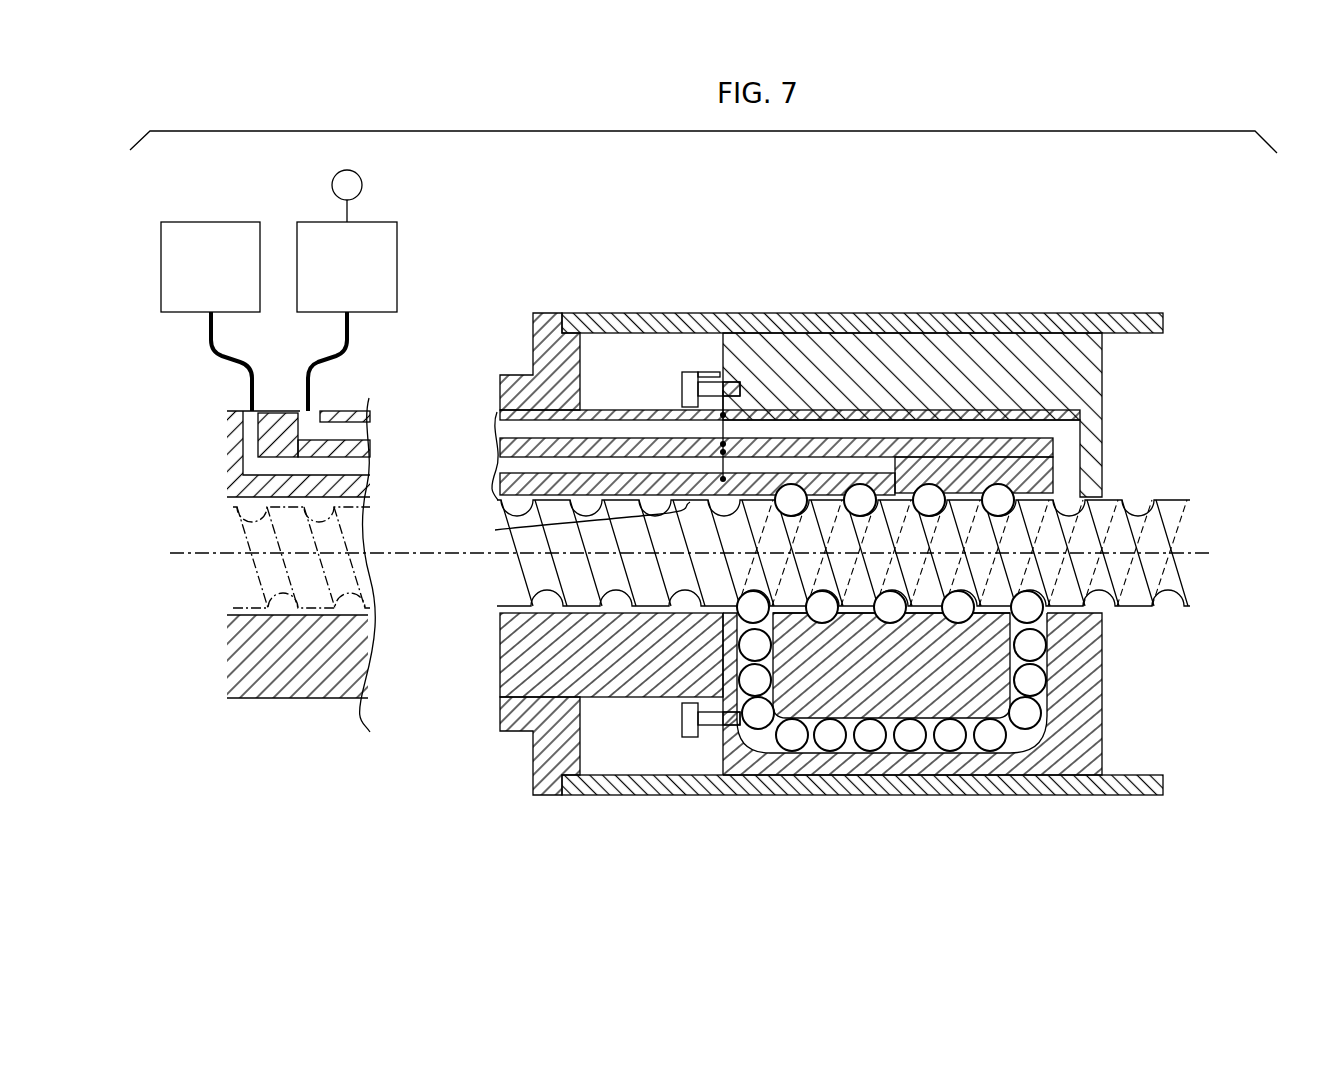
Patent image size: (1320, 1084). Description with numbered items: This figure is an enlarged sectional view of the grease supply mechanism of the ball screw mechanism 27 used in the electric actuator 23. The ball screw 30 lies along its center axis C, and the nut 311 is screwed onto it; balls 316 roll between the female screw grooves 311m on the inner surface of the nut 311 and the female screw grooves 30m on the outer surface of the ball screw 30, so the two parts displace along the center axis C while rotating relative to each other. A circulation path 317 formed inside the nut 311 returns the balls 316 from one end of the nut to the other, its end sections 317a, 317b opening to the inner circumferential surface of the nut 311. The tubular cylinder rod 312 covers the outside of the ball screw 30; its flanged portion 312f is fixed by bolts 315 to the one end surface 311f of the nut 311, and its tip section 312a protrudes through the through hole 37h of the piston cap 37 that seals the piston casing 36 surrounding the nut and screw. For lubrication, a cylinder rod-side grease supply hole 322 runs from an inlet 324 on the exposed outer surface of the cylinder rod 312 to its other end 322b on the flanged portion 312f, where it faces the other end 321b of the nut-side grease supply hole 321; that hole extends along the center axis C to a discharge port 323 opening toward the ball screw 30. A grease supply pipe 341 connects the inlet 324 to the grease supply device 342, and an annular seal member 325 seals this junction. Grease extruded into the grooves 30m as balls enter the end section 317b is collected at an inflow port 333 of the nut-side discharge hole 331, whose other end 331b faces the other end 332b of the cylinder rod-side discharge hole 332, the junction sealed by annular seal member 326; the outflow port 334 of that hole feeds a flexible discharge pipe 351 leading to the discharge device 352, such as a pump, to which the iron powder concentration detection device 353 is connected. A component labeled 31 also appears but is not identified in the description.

The electric actuator 23 is at (1086, 303).
The ball screw mechanism 27 is at (1150, 400).
The ball screw 30 is at (238, 490).
The female screw grooves of ball screw 30m is at (275, 598).
The ball 31 is at (1050, 440).
The piston casing 36 is at (905, 425).
The piston cap 37 is at (500, 372).
The through hole 37h is at (492, 430).
The nut 311 is at (1102, 740).
The one end surface of nut 311f is at (735, 445).
The female screw grooves of nut 311m is at (1045, 603).
The cylinder rod 312 is at (300, 705).
The tip section of cylinder rod 312a is at (330, 703).
The flanged portion 312f is at (723, 390).
The bolts 315 is at (688, 373).
The balls 316 is at (1062, 418).
The circulation path 317 is at (872, 744).
The end section of circulation path 317a is at (780, 596).
The end section of circulation path 317b is at (1045, 601).
The nut-side grease supply hole 321 is at (860, 468).
The other end of nut-side grease supply hole 321b is at (792, 430).
The cylinder rod-side grease supply hole 322 is at (395, 470).
The other end of cylinder rod-side grease supply hole 322b is at (642, 462).
The discharge port 323 is at (958, 475).
The inlet 324 is at (250, 410).
The annular seal member 325 is at (495, 532).
The annular seal member 326 is at (770, 430).
The nut-side discharge hole 331 is at (965, 425).
The other end of nut-side discharge hole 331b is at (748, 462).
The cylinder rod-side discharge hole 332 is at (374, 428).
The other end of cylinder rod-side discharge hole 332b is at (662, 410).
The inflow port 333 is at (1075, 470).
The outflow port 334 is at (318, 400).
The grease supply pipe 341 is at (250, 368).
The grease supply device 342 is at (263, 268).
The discharge pipe 351 is at (319, 358).
The discharge device 352 is at (399, 266).
The iron powder concentration detection device 353 is at (361, 183).
The center axis C is at (1205, 548).